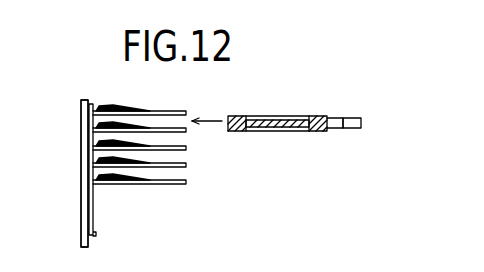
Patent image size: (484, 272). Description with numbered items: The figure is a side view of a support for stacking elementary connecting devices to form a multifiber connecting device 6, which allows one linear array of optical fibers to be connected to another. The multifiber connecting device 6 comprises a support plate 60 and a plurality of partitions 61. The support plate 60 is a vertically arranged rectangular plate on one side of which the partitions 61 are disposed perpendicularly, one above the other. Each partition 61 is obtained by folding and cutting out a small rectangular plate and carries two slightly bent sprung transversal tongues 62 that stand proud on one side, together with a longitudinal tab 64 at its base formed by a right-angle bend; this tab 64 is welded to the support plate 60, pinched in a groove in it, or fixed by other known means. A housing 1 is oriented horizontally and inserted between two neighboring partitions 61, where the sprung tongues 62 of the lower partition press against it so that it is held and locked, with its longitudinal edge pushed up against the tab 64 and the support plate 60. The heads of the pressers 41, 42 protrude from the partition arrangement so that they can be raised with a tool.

The housing 1 is at (352, 104).
The multifiber connecting device 6 is at (66, 233).
The presser 41 is at (349, 129).
The presser 42 is at (373, 136).
The support plate 60 is at (84, 108).
The partition 61 is at (180, 184).
The sprung transversal tongue 62 is at (118, 107).
The longitudinal tab 64 is at (93, 190).